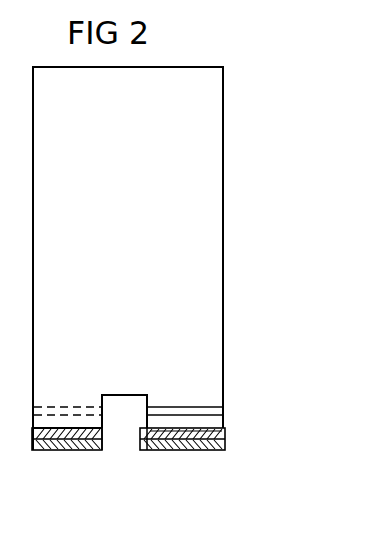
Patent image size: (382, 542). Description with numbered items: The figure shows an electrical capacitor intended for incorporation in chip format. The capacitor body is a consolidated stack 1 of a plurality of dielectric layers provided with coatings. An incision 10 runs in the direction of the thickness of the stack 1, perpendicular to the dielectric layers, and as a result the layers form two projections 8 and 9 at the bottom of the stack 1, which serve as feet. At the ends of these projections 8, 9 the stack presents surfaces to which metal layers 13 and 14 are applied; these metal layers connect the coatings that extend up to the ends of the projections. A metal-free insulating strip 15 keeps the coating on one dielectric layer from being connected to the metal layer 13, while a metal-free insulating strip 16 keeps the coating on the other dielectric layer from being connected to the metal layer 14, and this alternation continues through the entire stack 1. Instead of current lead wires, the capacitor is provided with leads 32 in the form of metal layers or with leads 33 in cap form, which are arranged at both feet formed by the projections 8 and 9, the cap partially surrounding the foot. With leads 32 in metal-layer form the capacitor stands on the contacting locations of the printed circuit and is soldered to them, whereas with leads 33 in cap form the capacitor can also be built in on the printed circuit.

The stack 1 is at (208, 100).
The projection 8 is at (208, 422).
The projection 9 is at (32, 418).
The incision 10 is at (122, 434).
The metal layer 13 is at (213, 437).
The metal layer 14 is at (32, 428).
The metal-free insulating strip 15 is at (180, 407).
The metal-free insulating strip 16 is at (92, 408).
The lead in the form of a metal layer 32 is at (50, 448).
The lead in cap form 33 is at (182, 448).